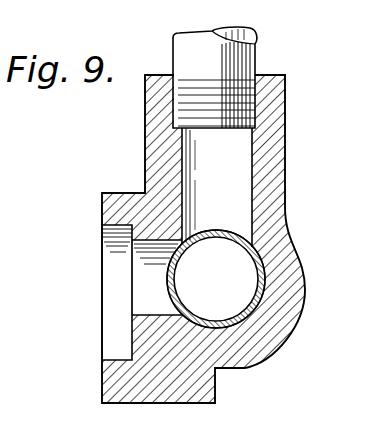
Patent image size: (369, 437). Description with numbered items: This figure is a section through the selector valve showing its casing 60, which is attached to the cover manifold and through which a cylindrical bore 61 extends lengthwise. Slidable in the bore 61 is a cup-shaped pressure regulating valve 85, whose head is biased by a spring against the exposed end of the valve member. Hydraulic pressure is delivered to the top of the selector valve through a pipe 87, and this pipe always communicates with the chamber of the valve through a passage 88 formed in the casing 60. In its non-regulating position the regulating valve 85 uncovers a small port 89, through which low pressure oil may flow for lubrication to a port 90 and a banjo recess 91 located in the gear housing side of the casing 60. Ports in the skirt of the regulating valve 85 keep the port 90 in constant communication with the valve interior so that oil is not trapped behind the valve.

The casing 60 is at (286, 116).
The cylindrical bore 61 is at (262, 291).
The pressure regulating valve 85 is at (257, 262).
The pipe 87 is at (215, 77).
The passage 88 is at (245, 183).
The small port 89 is at (197, 236).
The port 90 is at (165, 311).
The banjo recess 91 is at (103, 235).